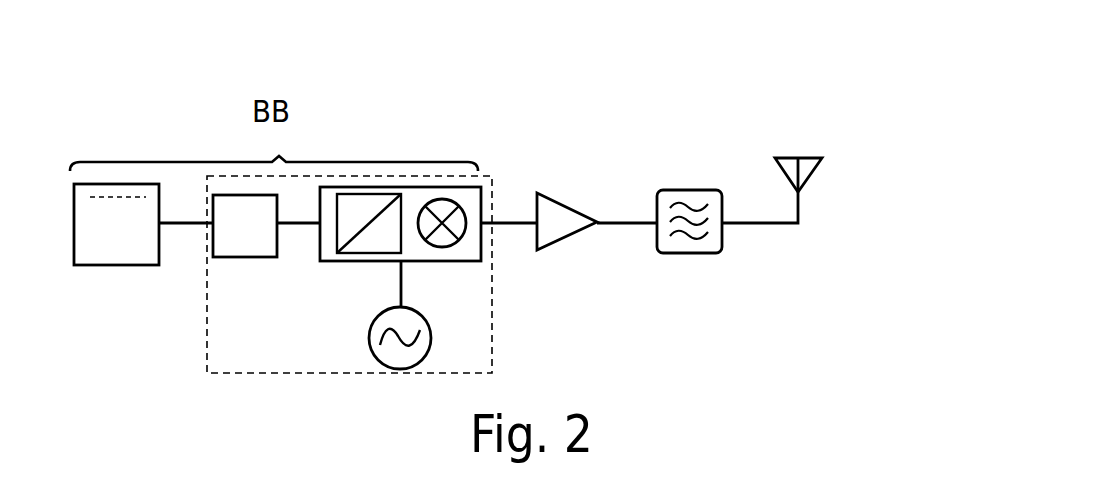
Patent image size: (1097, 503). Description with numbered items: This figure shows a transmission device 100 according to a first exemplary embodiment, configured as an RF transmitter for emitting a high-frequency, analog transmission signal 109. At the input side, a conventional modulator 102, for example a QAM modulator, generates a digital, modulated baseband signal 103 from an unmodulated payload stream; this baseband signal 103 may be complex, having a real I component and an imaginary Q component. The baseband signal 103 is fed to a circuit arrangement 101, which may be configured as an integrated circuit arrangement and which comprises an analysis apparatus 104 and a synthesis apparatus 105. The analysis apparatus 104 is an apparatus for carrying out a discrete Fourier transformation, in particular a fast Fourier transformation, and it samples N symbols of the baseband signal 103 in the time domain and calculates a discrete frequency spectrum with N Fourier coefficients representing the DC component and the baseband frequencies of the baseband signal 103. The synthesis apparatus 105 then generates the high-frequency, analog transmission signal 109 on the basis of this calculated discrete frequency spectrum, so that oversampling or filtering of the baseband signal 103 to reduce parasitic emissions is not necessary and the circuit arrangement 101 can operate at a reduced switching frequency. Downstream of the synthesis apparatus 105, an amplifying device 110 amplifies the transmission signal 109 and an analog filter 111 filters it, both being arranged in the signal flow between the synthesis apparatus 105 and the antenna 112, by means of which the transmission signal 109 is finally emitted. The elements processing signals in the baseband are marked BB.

The transmission device 100 is at (697, 92).
The circuit arrangement 101 is at (310, 197).
The modulator 102 is at (118, 240).
The digital baseband signal 103 is at (183, 223).
The analysis apparatus 104 is at (233, 245).
The synthesis apparatus 105 is at (418, 197).
The high-frequency, analog transmission signal 109 is at (519, 223).
The amplifying device 110 is at (558, 238).
The analog filter 111 is at (678, 253).
The antenna 112 is at (810, 180).